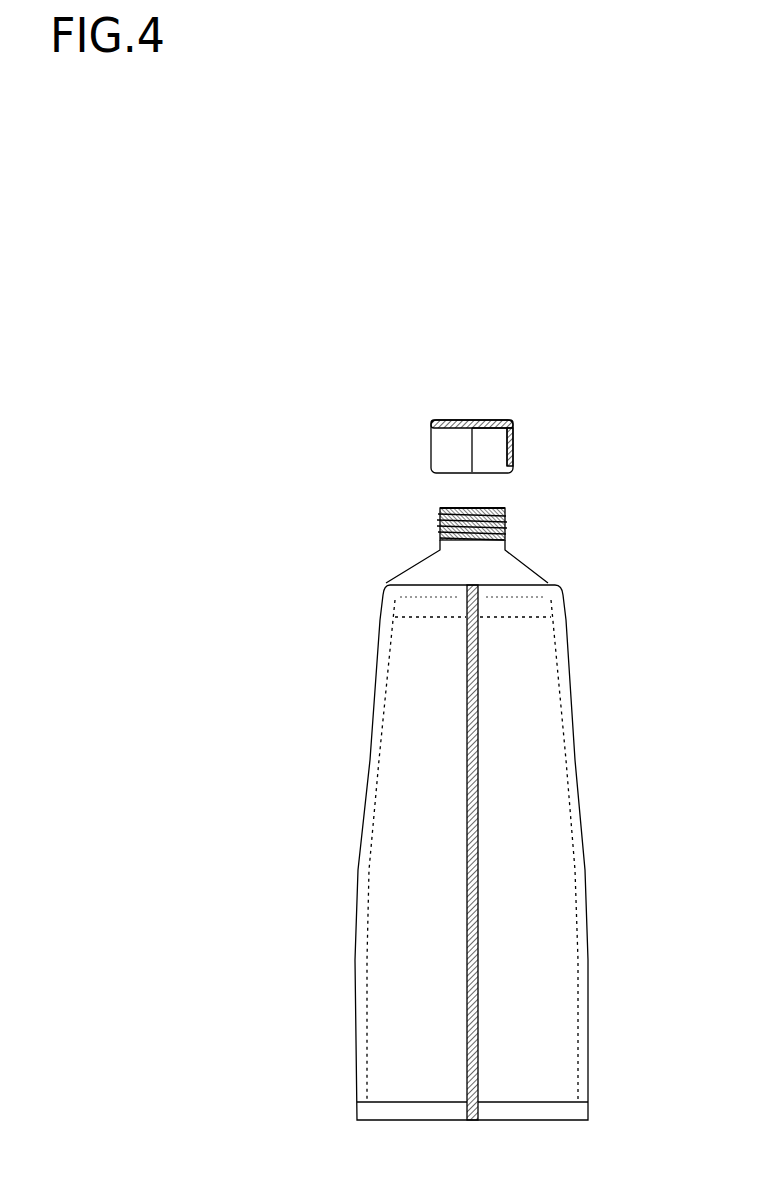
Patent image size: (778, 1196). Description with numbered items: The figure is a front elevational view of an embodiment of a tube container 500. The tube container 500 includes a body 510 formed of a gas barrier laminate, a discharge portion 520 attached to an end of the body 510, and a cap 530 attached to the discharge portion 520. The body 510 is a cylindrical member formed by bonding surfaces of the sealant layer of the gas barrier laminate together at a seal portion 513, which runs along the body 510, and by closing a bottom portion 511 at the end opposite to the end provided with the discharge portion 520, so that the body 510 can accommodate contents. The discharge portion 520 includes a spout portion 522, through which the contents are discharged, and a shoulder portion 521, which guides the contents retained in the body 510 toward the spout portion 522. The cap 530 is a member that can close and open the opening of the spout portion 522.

The tube container 500 is at (468, 350).
The cap 530 is at (420, 412).
The discharge portion 520 is at (528, 557).
The spout portion 522 is at (440, 510).
The shoulder portion 521 is at (455, 567).
The body 510 is at (577, 690).
The seal portion 513 is at (465, 700).
The bottom portion 511 is at (560, 1110).